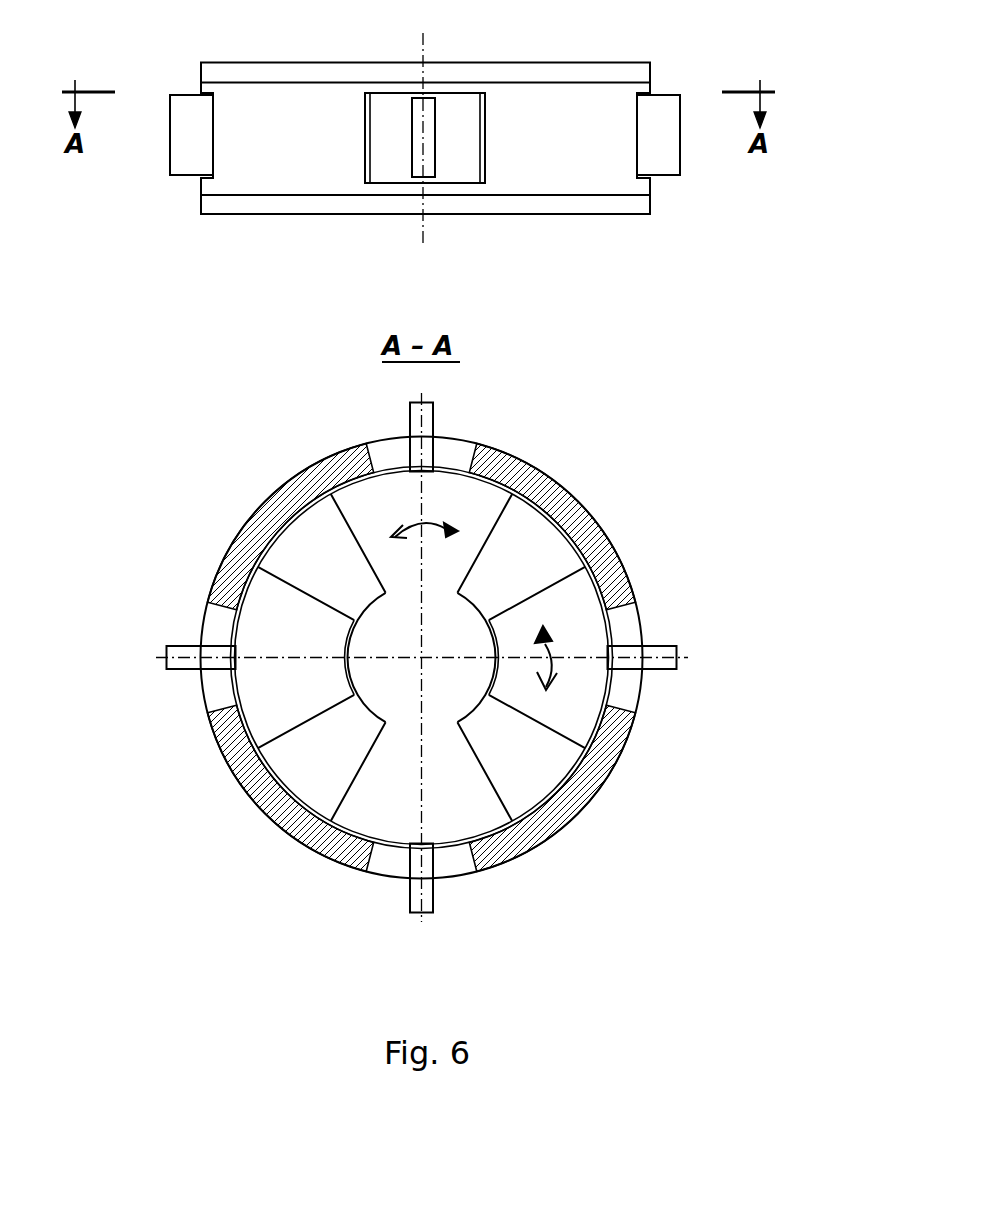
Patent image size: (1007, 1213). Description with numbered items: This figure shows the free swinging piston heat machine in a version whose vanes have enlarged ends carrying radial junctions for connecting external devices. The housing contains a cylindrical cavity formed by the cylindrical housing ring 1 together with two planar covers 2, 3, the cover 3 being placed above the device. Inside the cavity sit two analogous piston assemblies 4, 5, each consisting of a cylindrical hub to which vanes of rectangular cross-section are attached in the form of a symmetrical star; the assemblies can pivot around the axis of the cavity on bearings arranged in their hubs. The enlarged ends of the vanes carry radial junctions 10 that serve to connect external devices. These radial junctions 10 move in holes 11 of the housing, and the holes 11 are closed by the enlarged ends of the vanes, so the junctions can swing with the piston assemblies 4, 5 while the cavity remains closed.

The cylindrical housing ring 1 is at (255, 179).
The planar cover 2 is at (303, 203).
The planar cover 3 is at (250, 72).
The piston assembly 4 is at (290, 731).
The piston assembly 5 is at (345, 795).
The radial junction 10 is at (652, 117).
The hole 11 is at (458, 178).